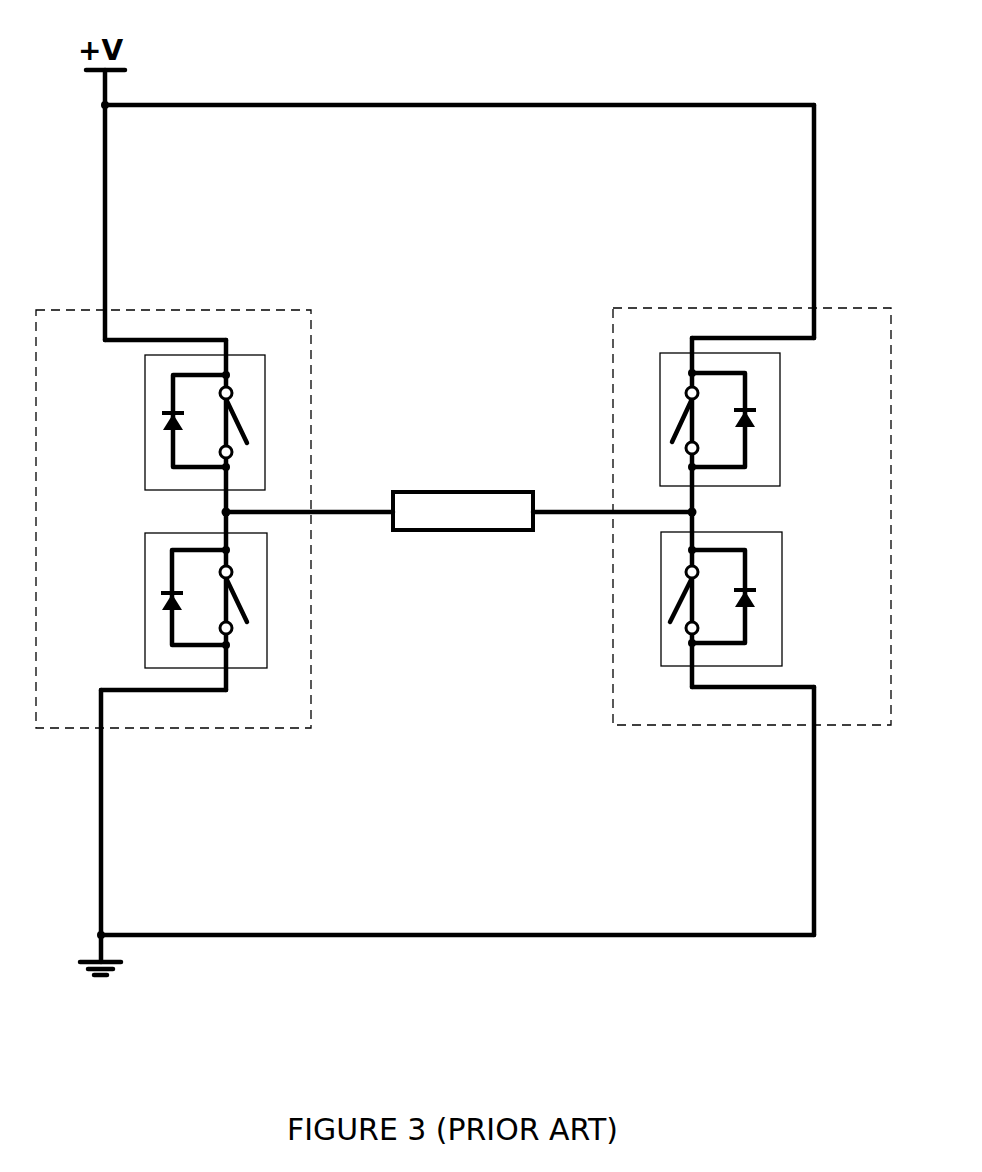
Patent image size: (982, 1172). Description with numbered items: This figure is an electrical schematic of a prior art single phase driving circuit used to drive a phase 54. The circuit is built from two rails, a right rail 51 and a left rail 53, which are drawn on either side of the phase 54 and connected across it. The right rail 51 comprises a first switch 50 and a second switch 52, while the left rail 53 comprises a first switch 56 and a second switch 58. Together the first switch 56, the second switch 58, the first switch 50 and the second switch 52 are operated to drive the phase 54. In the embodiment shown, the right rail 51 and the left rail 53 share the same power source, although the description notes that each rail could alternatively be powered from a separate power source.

The first switch 50 is at (780, 415).
The right rail 51 is at (613, 310).
The second switch 52 is at (782, 590).
The left rail 53 is at (310, 310).
The phase 54 is at (465, 485).
The first switch 56 is at (265, 420).
The second switch 58 is at (268, 602).